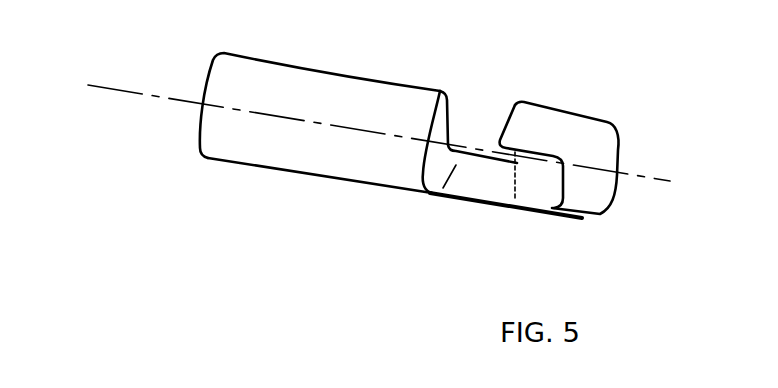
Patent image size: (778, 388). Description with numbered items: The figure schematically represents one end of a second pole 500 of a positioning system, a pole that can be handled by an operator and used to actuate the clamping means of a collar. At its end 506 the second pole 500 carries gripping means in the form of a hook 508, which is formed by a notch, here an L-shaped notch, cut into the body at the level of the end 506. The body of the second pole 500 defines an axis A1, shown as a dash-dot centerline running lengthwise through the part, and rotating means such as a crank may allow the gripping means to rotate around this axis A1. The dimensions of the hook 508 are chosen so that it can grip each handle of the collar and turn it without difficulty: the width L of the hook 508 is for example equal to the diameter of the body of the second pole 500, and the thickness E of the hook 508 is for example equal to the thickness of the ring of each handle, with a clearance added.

The second pole 500 is at (357, 90).
The end of the second pole 506 is at (380, 177).
The hook 508 is at (595, 135).
The axis A1 is at (107, 85).
The width of the hook L is at (459, 177).
The thickness of the hook E is at (526, 176).